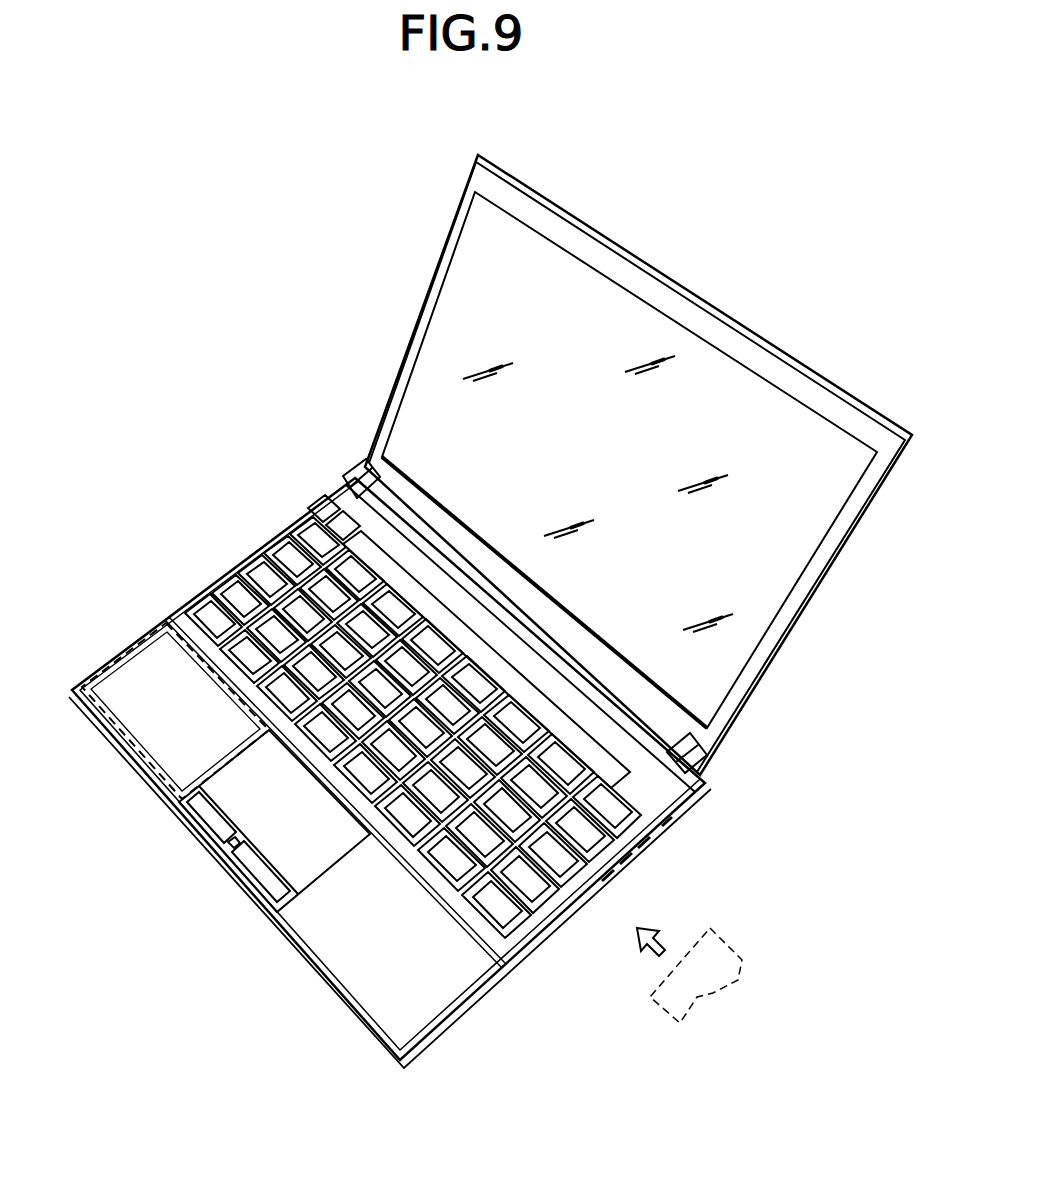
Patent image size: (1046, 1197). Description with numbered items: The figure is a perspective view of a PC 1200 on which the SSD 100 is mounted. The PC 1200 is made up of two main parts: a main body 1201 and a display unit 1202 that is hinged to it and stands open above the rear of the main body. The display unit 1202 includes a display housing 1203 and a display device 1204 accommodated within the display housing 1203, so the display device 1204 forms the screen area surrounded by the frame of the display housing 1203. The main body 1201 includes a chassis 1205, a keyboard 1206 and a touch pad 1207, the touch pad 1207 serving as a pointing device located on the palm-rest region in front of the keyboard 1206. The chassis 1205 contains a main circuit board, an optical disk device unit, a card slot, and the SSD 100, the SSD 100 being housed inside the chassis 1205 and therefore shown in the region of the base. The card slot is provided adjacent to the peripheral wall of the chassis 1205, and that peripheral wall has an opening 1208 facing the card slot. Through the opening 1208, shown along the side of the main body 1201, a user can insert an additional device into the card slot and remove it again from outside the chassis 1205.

The PC 1200 is at (233, 246).
The main body 1201 is at (214, 562).
The display unit 1202 is at (404, 321).
The display housing 1203 is at (705, 322).
The display device 1204 is at (765, 405).
The chassis 1205 is at (144, 652).
The SSD 100 is at (162, 722).
The keyboard 1206 is at (423, 643).
The touch pad 1207 is at (250, 782).
The opening 1208 is at (632, 852).